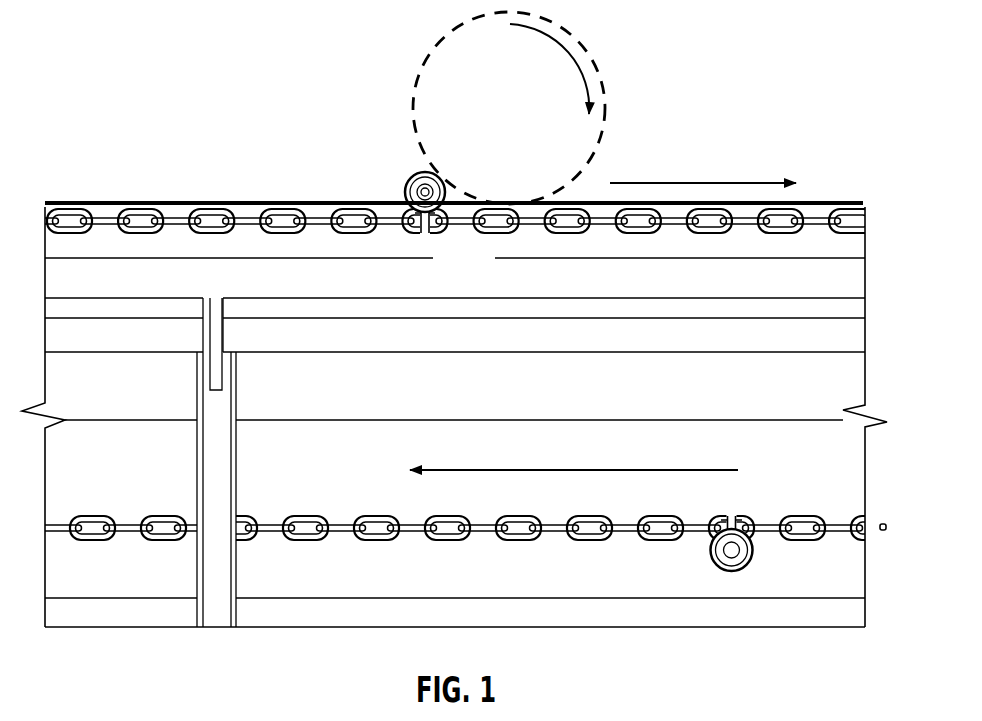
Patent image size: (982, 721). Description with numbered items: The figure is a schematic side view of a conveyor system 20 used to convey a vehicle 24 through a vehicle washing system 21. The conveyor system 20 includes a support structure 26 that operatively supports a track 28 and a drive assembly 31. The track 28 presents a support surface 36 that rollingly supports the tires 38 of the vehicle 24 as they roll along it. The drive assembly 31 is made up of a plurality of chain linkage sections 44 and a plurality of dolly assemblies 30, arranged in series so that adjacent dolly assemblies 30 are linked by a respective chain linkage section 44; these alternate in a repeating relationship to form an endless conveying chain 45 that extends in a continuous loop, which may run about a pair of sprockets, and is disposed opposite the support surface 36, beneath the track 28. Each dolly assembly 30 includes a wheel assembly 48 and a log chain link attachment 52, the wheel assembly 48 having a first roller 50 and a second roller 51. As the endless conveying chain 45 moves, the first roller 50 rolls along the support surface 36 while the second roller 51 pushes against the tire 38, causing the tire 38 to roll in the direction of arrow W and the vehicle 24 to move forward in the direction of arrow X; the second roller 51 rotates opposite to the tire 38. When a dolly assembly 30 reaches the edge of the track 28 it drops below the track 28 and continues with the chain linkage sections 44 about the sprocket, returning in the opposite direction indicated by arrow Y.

The conveyor system 20 is at (116, 86).
The vehicle washing system 21 is at (136, 33).
The vehicle 24 is at (438, 48).
The support structure 26 is at (197, 457).
The track 28 is at (137, 202).
The dolly assembly 30 is at (398, 176).
The drive assembly 31 is at (279, 189).
The support surface 36 is at (107, 199).
The tire 38 is at (422, 68).
The chain linkage section 44 is at (173, 234).
The endless conveying chain 45 is at (100, 541).
The wheel assembly 48 is at (411, 166).
The first roller 50 is at (456, 189).
The second roller 51 is at (410, 196).
The log chain link attachment 52 is at (428, 240).
The tire rotation direction W is at (563, 40).
The forward direction X is at (687, 183).
The return direction Y is at (515, 470).